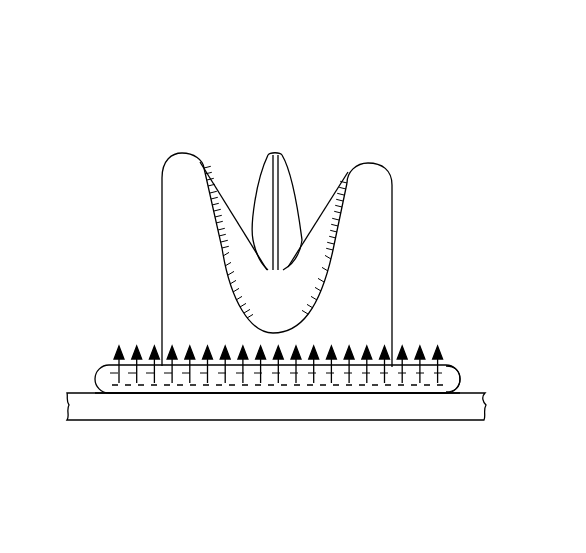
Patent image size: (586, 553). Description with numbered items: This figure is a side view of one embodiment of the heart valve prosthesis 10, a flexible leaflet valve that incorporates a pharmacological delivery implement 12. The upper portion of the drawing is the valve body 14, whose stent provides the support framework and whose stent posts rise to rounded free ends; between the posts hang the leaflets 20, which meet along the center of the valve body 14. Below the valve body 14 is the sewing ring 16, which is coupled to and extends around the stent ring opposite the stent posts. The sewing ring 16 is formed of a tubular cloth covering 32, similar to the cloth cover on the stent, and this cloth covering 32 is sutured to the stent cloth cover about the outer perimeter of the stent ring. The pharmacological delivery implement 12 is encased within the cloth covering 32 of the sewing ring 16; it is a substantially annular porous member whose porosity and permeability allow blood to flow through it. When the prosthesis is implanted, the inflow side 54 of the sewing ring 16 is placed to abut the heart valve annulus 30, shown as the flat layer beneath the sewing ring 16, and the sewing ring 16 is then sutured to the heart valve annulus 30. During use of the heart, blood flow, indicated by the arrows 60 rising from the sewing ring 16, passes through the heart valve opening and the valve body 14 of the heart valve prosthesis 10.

The heart valve prosthesis 10 is at (436, 116).
The valve body 14 is at (403, 205).
The leaflets 20 is at (217, 202).
The tubular cloth covering 32 is at (96, 366).
The arrows 60 is at (421, 355).
The sewing ring 16 is at (455, 370).
The pharmacological delivery implement 12 is at (458, 387).
The heart valve annulus 30 is at (460, 421).
The inflow side 54 is at (140, 394).